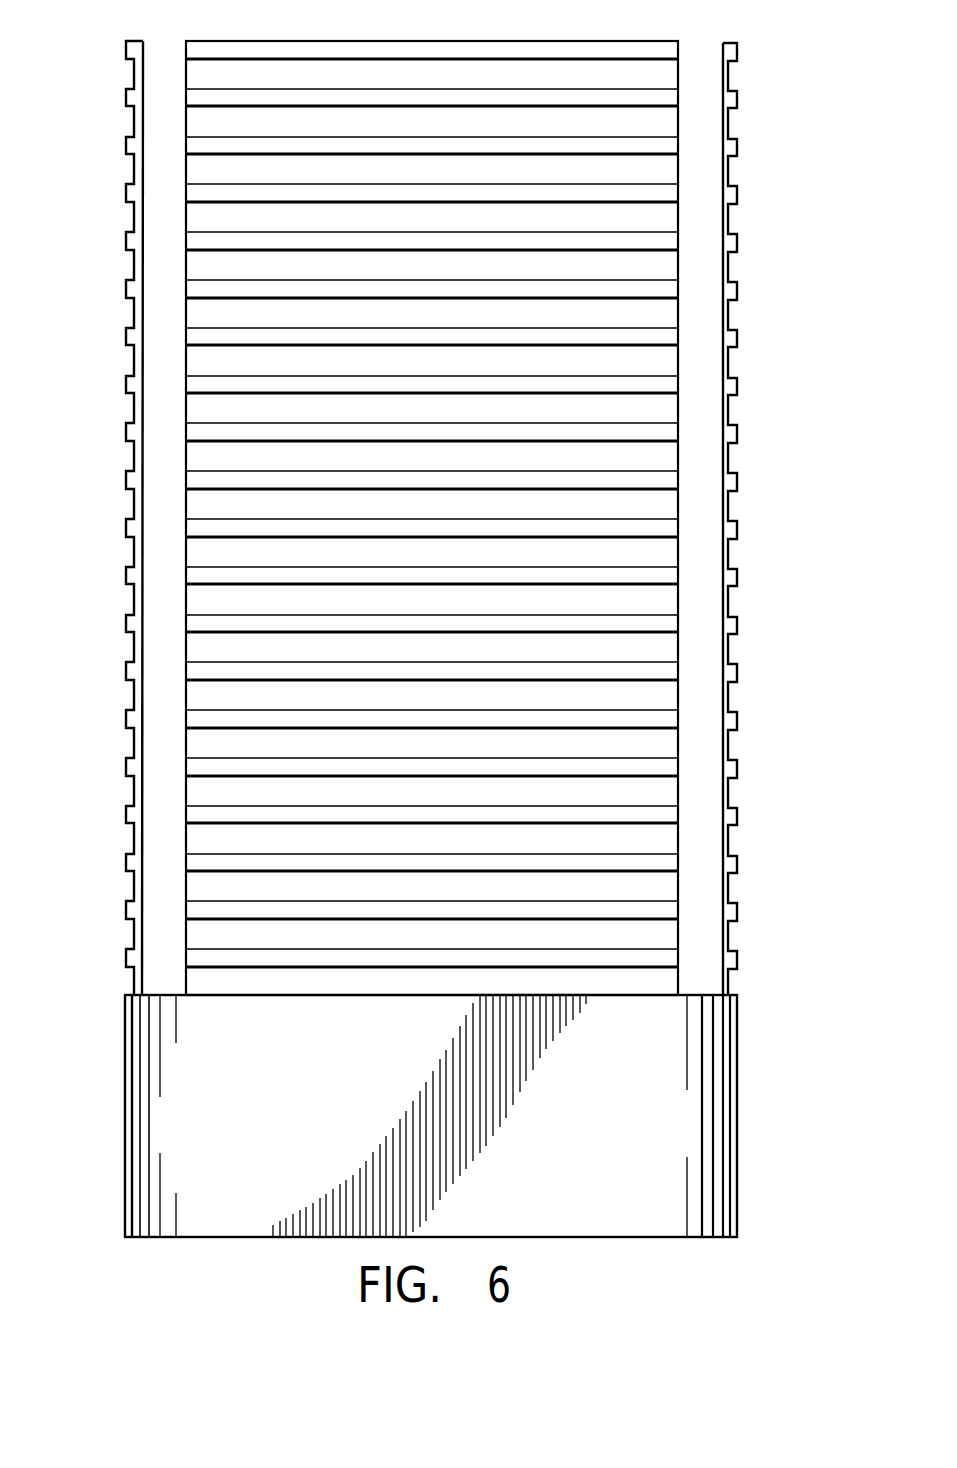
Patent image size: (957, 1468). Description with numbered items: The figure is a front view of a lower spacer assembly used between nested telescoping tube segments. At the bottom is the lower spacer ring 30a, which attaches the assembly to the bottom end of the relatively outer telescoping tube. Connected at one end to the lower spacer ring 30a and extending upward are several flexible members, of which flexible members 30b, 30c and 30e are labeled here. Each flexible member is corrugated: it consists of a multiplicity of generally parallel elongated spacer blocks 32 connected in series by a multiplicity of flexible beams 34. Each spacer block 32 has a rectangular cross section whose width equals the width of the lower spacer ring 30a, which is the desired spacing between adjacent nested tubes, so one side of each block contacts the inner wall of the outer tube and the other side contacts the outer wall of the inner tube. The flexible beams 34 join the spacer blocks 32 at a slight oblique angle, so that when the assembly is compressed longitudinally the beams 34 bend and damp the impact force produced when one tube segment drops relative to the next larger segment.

The lower spacer ring 30a is at (737, 1093).
The flexible member 30b is at (504, 518).
The flexible member 30c is at (747, 519).
The flexible member 30e is at (124, 591).
The spacer block 32 is at (560, 238).
The flexible beam 34 is at (643, 268).